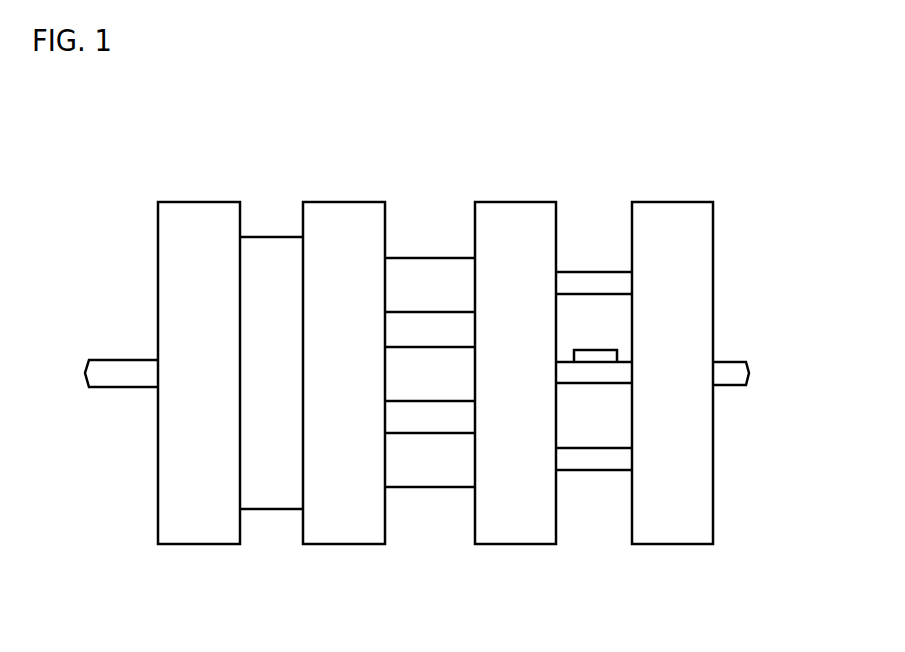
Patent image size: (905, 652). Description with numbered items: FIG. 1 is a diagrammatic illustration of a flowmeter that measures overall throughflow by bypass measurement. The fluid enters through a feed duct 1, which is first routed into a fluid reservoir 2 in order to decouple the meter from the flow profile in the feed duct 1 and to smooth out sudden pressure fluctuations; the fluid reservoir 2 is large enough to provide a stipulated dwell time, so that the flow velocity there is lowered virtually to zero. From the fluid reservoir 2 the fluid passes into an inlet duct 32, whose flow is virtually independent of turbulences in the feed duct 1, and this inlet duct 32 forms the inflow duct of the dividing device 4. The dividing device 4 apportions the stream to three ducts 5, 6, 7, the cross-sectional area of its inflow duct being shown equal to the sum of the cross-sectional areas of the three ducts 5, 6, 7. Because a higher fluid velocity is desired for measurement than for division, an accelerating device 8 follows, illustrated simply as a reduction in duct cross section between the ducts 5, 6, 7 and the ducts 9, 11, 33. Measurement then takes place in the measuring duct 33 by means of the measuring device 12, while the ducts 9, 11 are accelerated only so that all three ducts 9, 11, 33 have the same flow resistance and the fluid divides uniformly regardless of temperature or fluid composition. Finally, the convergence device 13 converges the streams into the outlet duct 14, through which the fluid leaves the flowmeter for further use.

The feed duct 1 is at (105, 388).
The fluid reservoir 2 is at (201, 525).
The inlet duct 32 is at (263, 453).
The dividing device 4 is at (348, 520).
The duct 5 is at (420, 275).
The duct 6 is at (439, 363).
The duct 7 is at (421, 474).
The accelerating device 8 is at (517, 522).
The duct 9 is at (567, 283).
The measuring device 12 is at (595, 355).
The measuring duct 33 is at (625, 372).
The duct 11 is at (595, 458).
The convergence device 13 is at (680, 525).
The outlet duct 14 is at (723, 373).